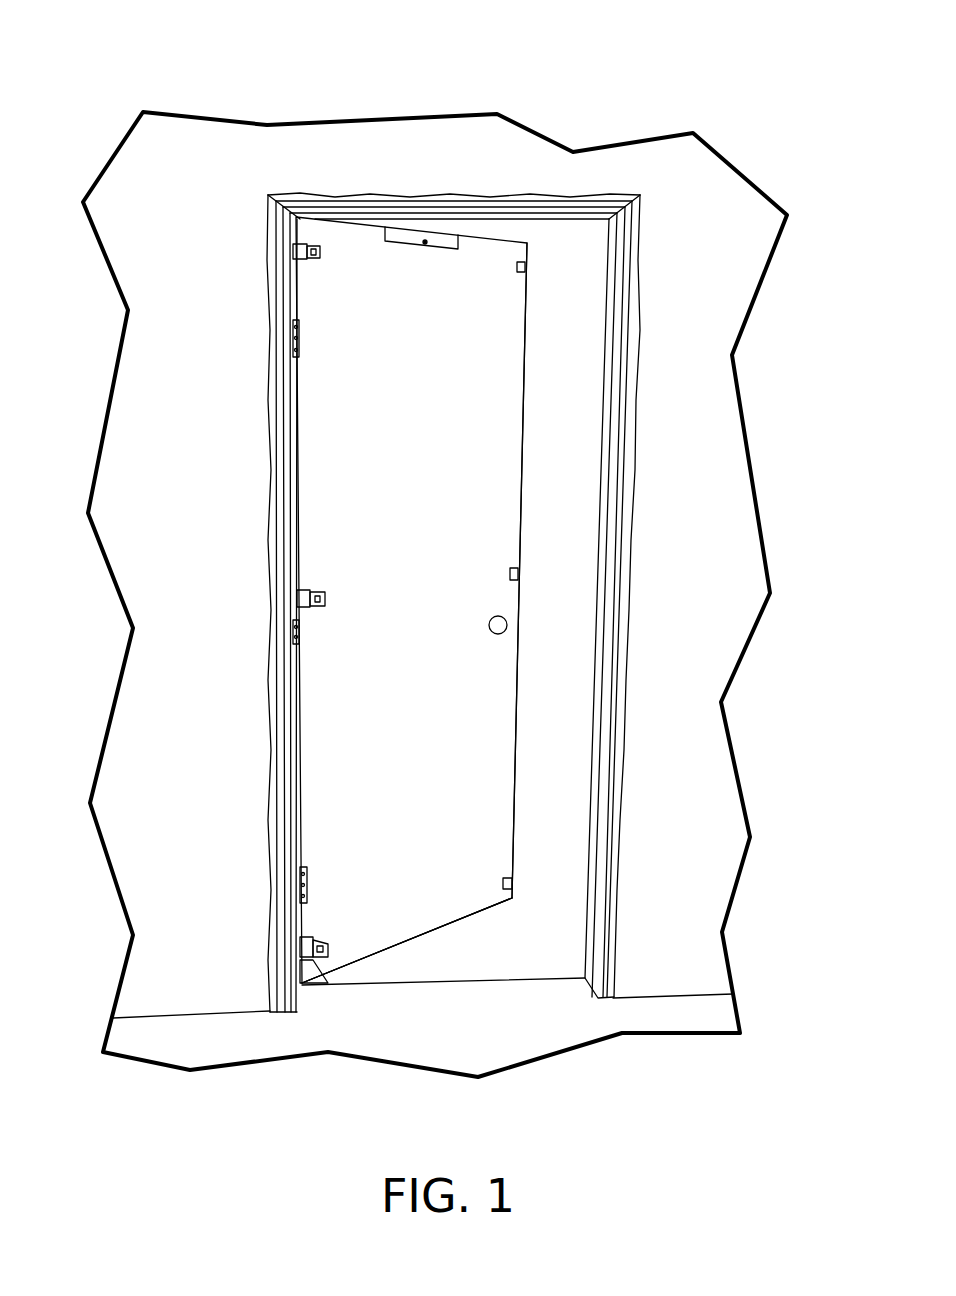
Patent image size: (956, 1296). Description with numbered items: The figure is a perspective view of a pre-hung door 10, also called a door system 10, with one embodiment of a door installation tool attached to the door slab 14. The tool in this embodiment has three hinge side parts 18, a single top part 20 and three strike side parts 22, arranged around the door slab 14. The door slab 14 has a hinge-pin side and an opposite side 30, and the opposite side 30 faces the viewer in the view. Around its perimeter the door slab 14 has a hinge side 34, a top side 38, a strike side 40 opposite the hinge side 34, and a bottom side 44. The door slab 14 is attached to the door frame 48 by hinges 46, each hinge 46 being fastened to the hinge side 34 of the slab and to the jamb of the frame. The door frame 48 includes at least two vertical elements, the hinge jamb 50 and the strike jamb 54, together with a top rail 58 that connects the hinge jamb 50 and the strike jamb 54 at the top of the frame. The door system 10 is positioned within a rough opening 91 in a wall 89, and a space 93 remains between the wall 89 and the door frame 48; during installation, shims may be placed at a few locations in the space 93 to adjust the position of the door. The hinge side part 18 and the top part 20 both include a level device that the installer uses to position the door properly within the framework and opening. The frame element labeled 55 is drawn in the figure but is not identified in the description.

The pre-hung door 10 is at (592, 66).
The door slab 14 is at (398, 624).
The hinge side parts 18 is at (322, 252).
The top part 20 is at (405, 237).
The strike side parts 22 is at (516, 266).
The opposite side 30 is at (453, 902).
The hinge side 34 is at (307, 962).
The top side 38 is at (495, 243).
The strike side 40 is at (517, 722).
The bottom side 44 is at (430, 938).
The hinges 46 is at (300, 335).
The door frame 48 is at (630, 288).
The hinge jamb 50 is at (280, 533).
The strike jamb 54 is at (625, 410).
The frame bottom 55 is at (598, 885).
The top rail 58 is at (365, 200).
The wall 89 is at (691, 547).
The rough opening 91 is at (625, 645).
The space 93 is at (628, 478).